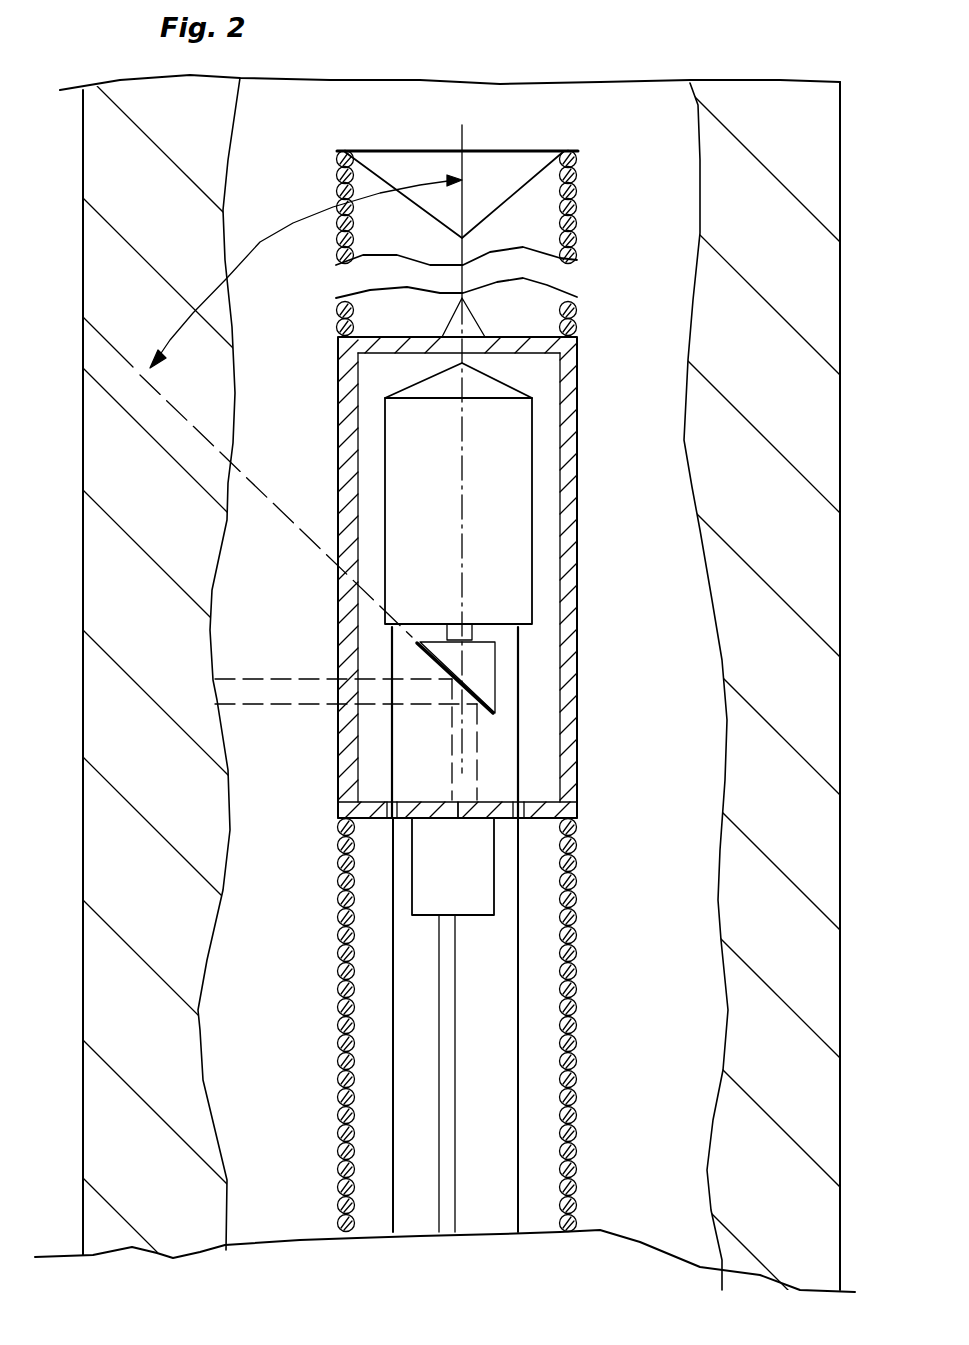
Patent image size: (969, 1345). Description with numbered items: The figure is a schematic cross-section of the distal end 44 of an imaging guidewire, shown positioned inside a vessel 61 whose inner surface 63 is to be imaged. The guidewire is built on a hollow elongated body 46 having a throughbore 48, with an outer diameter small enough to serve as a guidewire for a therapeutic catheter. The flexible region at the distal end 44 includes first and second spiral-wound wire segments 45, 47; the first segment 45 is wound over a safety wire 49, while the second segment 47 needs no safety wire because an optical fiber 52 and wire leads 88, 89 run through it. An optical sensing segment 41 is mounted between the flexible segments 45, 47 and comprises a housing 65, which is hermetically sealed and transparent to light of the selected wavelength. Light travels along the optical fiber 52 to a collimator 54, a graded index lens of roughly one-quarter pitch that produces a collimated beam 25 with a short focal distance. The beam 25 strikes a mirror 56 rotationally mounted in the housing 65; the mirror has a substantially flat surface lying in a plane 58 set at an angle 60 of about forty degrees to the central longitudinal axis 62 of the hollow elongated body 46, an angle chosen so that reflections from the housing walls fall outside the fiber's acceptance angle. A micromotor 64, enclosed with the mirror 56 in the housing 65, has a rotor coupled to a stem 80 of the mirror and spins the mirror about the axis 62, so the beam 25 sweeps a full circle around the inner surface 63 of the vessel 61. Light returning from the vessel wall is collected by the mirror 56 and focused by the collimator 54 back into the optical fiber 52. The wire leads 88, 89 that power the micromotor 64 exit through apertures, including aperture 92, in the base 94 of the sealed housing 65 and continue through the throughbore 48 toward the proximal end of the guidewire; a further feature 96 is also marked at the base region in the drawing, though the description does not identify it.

The collimated beam 25 is at (261, 680).
The optical sensing segment 41 is at (590, 378).
The distal end 44 is at (530, 142).
The first spiral-wound wire segment 45 is at (583, 213).
The hollow elongated body 46 is at (573, 1003).
The second spiral-wound wire segment 47 is at (578, 1105).
The throughbore 48 is at (560, 928).
The safety wire 49 is at (463, 248).
The optical fiber 52 is at (452, 1067).
The collimator 54 is at (478, 867).
The mirror 56 is at (450, 662).
The plane 58 is at (196, 412).
The angle 60 is at (265, 250).
The vessel 61 is at (112, 575).
The central longitudinal axis 62 is at (470, 128).
The inner surface 63 is at (210, 628).
The micromotor 64 is at (515, 455).
The housing 65 is at (567, 508).
The stem 80 is at (477, 633).
The wire lead 88 is at (520, 747).
The wire lead 89 is at (388, 868).
The aperture 92 is at (342, 808).
The base 94 is at (545, 812).
The seal 96 is at (527, 805).